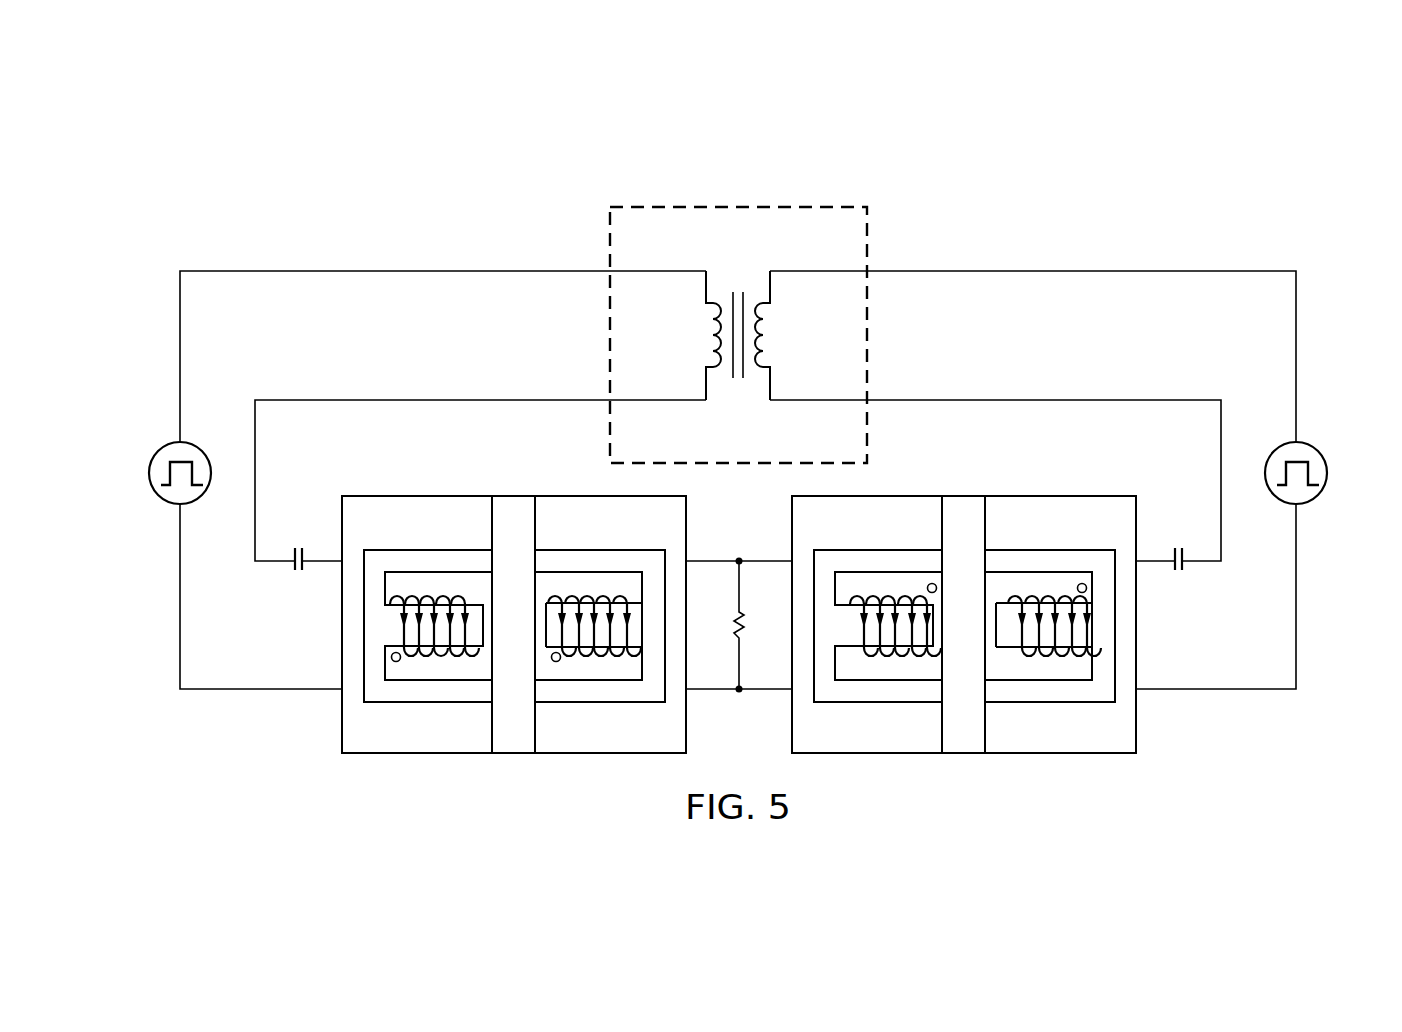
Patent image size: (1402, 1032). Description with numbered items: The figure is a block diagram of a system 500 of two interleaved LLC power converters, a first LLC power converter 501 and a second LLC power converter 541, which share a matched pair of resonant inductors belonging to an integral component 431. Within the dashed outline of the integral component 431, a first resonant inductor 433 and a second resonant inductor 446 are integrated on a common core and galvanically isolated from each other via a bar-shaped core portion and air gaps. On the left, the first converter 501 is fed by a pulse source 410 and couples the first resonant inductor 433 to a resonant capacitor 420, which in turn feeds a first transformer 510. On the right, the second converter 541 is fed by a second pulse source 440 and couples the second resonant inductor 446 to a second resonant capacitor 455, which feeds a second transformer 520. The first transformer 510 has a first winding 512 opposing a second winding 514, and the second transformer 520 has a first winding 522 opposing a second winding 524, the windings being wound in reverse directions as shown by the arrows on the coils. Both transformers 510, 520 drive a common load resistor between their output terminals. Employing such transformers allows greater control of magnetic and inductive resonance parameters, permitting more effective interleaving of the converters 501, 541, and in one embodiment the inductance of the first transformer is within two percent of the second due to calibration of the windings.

The system 500 is at (390, 134).
The first LLC power converter 501 is at (258, 231).
The second LLC power converter 541 is at (1177, 236).
The integral component 431 is at (658, 198).
The first resonant inductor 433 is at (722, 302).
The second resonant inductor 446 is at (755, 368).
The second resonant inductor 410 is at (148, 471).
The second pulse source 440 is at (1330, 472).
The resonant capacitor 420 is at (297, 575).
The second resonant capacitor 455 is at (1180, 575).
The first transformer 510 is at (418, 762).
The first winding 512 is at (437, 657).
The second winding 514 is at (597, 657).
The second transformer 520 is at (1060, 762).
The first winding 522 is at (1043, 657).
The second winding 524 is at (882, 657).